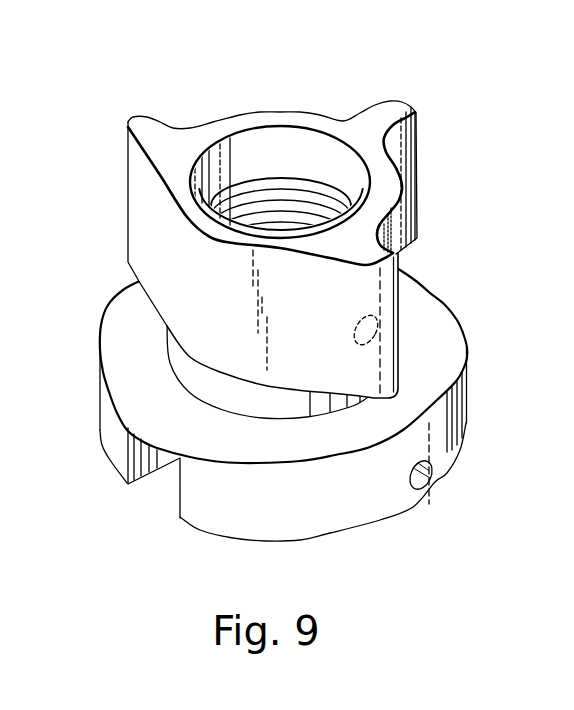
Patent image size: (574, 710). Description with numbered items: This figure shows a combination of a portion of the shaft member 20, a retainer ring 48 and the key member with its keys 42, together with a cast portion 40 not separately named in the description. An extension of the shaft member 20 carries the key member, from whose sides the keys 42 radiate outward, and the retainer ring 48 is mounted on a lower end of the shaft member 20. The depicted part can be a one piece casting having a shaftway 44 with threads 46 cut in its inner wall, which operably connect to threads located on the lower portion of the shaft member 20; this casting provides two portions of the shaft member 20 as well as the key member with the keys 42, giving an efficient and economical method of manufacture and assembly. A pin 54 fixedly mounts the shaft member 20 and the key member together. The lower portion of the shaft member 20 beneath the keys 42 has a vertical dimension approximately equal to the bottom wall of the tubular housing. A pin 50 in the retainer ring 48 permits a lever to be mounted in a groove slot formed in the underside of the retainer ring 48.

The shaft member 20 is at (200, 368).
The nut 40 is at (302, 224).
The keys 42 is at (143, 123).
The shaftway 44 is at (316, 148).
The threads 46 is at (253, 182).
The retainer ring 48 is at (432, 488).
The pin 50 is at (421, 475).
The pin 54 is at (378, 332).